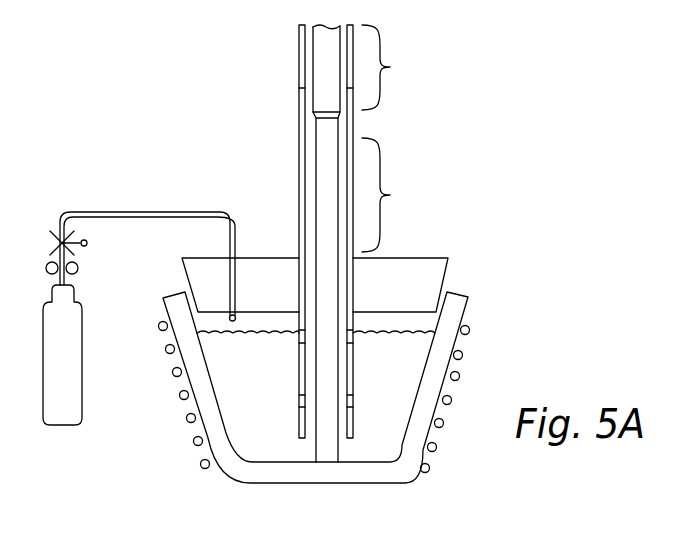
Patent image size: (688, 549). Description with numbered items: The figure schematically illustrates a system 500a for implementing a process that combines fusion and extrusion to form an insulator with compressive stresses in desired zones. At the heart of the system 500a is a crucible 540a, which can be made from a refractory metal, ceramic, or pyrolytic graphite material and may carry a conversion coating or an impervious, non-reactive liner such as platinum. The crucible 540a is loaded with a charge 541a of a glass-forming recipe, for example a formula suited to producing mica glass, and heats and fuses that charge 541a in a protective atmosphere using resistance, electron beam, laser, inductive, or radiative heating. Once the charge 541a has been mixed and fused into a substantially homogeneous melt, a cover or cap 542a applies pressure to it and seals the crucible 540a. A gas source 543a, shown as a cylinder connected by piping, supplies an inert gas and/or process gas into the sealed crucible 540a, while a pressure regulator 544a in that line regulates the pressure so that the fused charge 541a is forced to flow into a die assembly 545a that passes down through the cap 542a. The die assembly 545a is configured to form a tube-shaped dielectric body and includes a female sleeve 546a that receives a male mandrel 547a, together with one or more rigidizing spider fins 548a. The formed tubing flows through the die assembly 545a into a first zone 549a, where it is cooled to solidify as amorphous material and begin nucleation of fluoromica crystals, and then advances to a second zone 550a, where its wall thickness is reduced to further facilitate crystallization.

The system 500a is at (263, 179).
The second zone 550a is at (390, 67).
The first zone 549a is at (390, 195).
The die assembly 545a is at (294, 254).
The cover or cap 542a is at (445, 268).
The crucible 540a is at (452, 318).
The charge 541a is at (238, 412).
The gas source 543a is at (68, 322).
The pressure regulator 544a is at (57, 238).
The female sleeve 546a is at (357, 381).
The male mandrel 547a is at (327, 452).
The rigidizing spider fins 548a is at (308, 403).